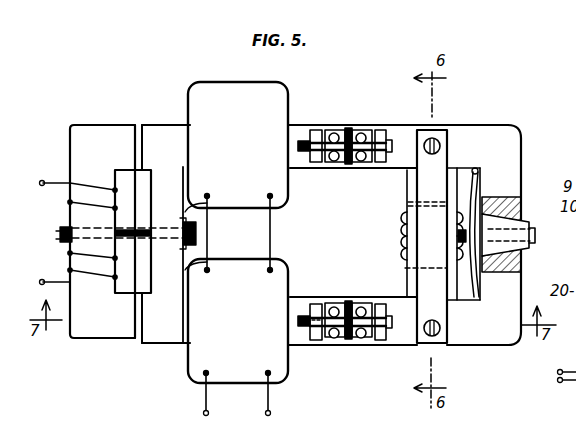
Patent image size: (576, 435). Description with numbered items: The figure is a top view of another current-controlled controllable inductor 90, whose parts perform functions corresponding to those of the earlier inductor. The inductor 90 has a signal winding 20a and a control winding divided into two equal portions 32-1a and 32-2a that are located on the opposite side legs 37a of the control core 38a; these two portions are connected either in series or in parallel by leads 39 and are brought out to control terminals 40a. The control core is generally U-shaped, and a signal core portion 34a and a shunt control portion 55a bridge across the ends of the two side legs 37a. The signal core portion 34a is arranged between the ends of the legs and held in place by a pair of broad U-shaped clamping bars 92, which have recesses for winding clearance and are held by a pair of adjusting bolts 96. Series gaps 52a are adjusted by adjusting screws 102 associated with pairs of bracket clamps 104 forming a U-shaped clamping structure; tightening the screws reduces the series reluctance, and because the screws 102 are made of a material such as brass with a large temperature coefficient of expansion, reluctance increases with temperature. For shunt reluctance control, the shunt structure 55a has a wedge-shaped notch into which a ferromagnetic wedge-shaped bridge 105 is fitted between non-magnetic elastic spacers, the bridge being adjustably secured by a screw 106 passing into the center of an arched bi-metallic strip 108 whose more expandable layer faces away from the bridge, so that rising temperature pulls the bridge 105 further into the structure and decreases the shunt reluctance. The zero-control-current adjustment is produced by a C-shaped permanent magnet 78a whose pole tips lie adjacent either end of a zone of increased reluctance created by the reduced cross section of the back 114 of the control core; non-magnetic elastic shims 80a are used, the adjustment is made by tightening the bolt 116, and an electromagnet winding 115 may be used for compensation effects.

The controllable inductor 90 is at (128, 71).
The control core 38a is at (159, 124).
The C-shaped permanent magnet 78a is at (72, 164).
The non-magnetic elastic shims 80a is at (137, 125).
The electromagnet winding 115 is at (68, 202).
The bolt 116 is at (61, 243).
The back of the control core 114 is at (186, 283).
The control winding portion 32-1a is at (298, 90).
The control winding portion 32-2a is at (292, 270).
The leads 39 is at (270, 231).
The control terminals 40a is at (255, 419).
The gaps 52a is at (349, 130).
The bracket clamps 104 is at (316, 340).
The adjusting screws 102 is at (370, 160).
The side legs 37a is at (405, 128).
The clamping bars 92 is at (440, 160).
The adjusting bolts 96 is at (434, 142).
The signal winding 20a is at (396, 235).
The signal core portion 34a is at (398, 203).
The arched bi-metallic strip 108 is at (477, 170).
The wedge-shaped bridge 105 is at (529, 250).
The screw 106 is at (536, 235).
The shunt control portion 55a is at (568, 142).